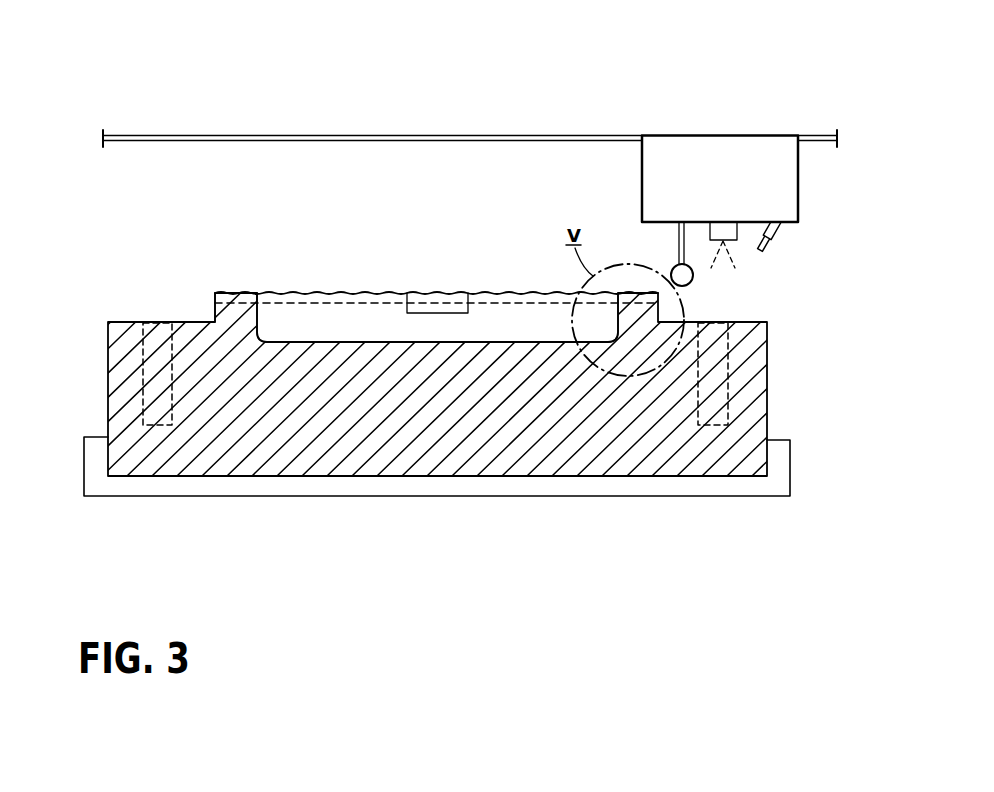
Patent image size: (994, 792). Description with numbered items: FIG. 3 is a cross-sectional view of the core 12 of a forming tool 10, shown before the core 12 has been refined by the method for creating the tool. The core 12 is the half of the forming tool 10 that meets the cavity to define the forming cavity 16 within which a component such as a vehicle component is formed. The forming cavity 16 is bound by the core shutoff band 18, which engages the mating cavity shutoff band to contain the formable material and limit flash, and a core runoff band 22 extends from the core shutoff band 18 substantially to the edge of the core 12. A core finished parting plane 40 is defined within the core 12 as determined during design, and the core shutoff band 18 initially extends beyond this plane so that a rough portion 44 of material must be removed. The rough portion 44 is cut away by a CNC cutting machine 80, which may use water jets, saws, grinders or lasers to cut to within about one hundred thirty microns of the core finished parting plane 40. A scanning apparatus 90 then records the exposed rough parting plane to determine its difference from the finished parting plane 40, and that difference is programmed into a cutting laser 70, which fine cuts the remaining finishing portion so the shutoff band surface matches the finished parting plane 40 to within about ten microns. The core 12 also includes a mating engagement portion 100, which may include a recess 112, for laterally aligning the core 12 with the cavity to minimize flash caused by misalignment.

The forming tool 10 is at (158, 67).
The core 12 is at (132, 510).
The forming cavity 16 is at (297, 318).
The core shutoff band 18 is at (230, 315).
The core runoff band 22 is at (132, 322).
The core finished parting plane 40 is at (490, 296).
The rough portion 44 is at (487, 292).
The cutting laser 70 is at (782, 236).
The CNC cutting machine 80 is at (670, 267).
The scanning apparatus 90 is at (724, 232).
The mating engagement portion 100 is at (137, 363).
The recess 112 is at (728, 382).